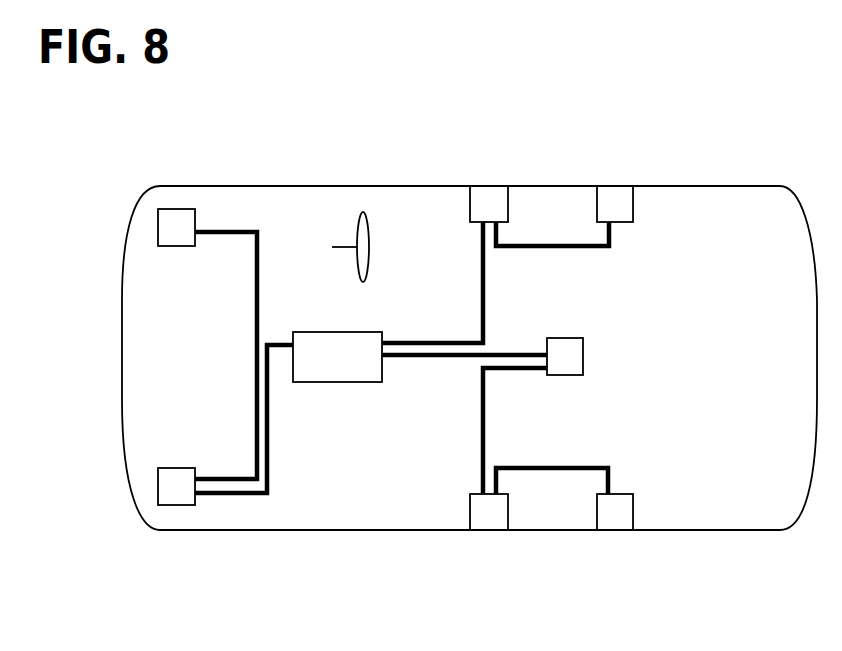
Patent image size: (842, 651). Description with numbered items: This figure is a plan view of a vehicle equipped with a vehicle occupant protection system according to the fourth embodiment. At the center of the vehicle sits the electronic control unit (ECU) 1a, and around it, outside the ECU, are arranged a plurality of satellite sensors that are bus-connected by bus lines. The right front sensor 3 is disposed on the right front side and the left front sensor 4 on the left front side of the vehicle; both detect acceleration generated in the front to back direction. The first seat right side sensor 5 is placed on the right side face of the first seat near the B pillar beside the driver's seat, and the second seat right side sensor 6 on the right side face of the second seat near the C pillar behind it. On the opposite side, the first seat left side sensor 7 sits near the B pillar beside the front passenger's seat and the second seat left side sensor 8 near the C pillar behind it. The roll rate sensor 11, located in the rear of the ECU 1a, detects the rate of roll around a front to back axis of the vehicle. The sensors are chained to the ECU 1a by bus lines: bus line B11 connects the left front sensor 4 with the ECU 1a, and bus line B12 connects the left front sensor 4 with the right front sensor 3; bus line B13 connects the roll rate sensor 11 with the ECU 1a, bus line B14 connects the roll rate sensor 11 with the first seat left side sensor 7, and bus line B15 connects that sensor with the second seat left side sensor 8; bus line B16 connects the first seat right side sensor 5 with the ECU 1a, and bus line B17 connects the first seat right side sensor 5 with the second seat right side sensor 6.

The electronic control unit (ECU) 1a is at (337, 357).
The right front sensor 3 is at (178, 209).
The left front sensor 4 is at (178, 505).
The first seat right side sensor 5 is at (478, 196).
The second seat right side sensor 6 is at (605, 196).
The first seat left side sensor 7 is at (488, 520).
The second seat left side sensor 8 is at (613, 520).
The roll rate sensor 11 is at (560, 348).
The bus line B11 is at (268, 418).
The bus line B12 is at (257, 275).
The bus line B13 is at (420, 358).
The bus line B14 is at (485, 436).
The bus line B15 is at (610, 478).
The bus line B16 is at (483, 274).
The bus line B17 is at (612, 231).